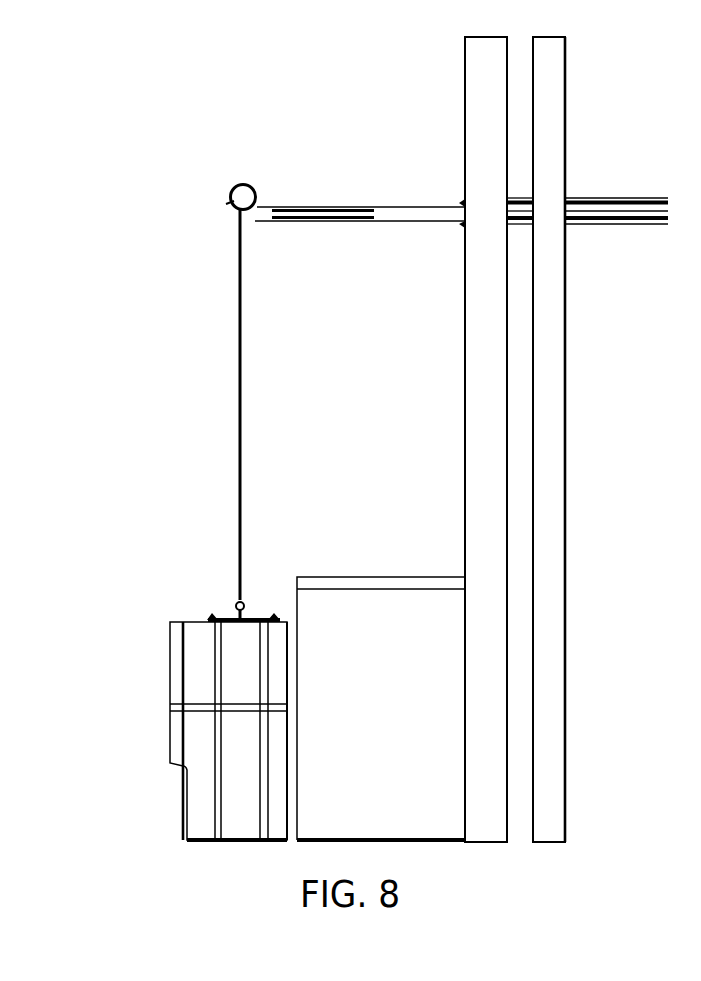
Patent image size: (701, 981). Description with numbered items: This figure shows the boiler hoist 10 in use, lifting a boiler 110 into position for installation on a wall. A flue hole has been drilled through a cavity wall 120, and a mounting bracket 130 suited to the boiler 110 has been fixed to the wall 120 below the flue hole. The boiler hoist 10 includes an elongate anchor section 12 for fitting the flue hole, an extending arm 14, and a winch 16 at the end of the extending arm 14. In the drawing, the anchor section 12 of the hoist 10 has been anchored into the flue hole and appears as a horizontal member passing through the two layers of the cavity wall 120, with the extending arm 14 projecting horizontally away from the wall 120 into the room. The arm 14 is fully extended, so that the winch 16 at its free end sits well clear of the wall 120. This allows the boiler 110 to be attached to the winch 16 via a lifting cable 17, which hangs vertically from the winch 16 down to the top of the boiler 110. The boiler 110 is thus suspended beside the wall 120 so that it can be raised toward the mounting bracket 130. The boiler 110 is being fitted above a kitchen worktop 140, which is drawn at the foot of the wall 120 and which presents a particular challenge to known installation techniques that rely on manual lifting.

The boiler hoist 10 is at (388, 168).
The anchor section 12 is at (597, 196).
The extending arm 14 is at (326, 224).
The winch 16 is at (222, 189).
The lifting cable 17 is at (238, 433).
The boiler 110 is at (198, 673).
The cavity wall 120 is at (484, 398).
The mounting bracket 130 is at (465, 272).
The kitchen worktop 140 is at (413, 580).